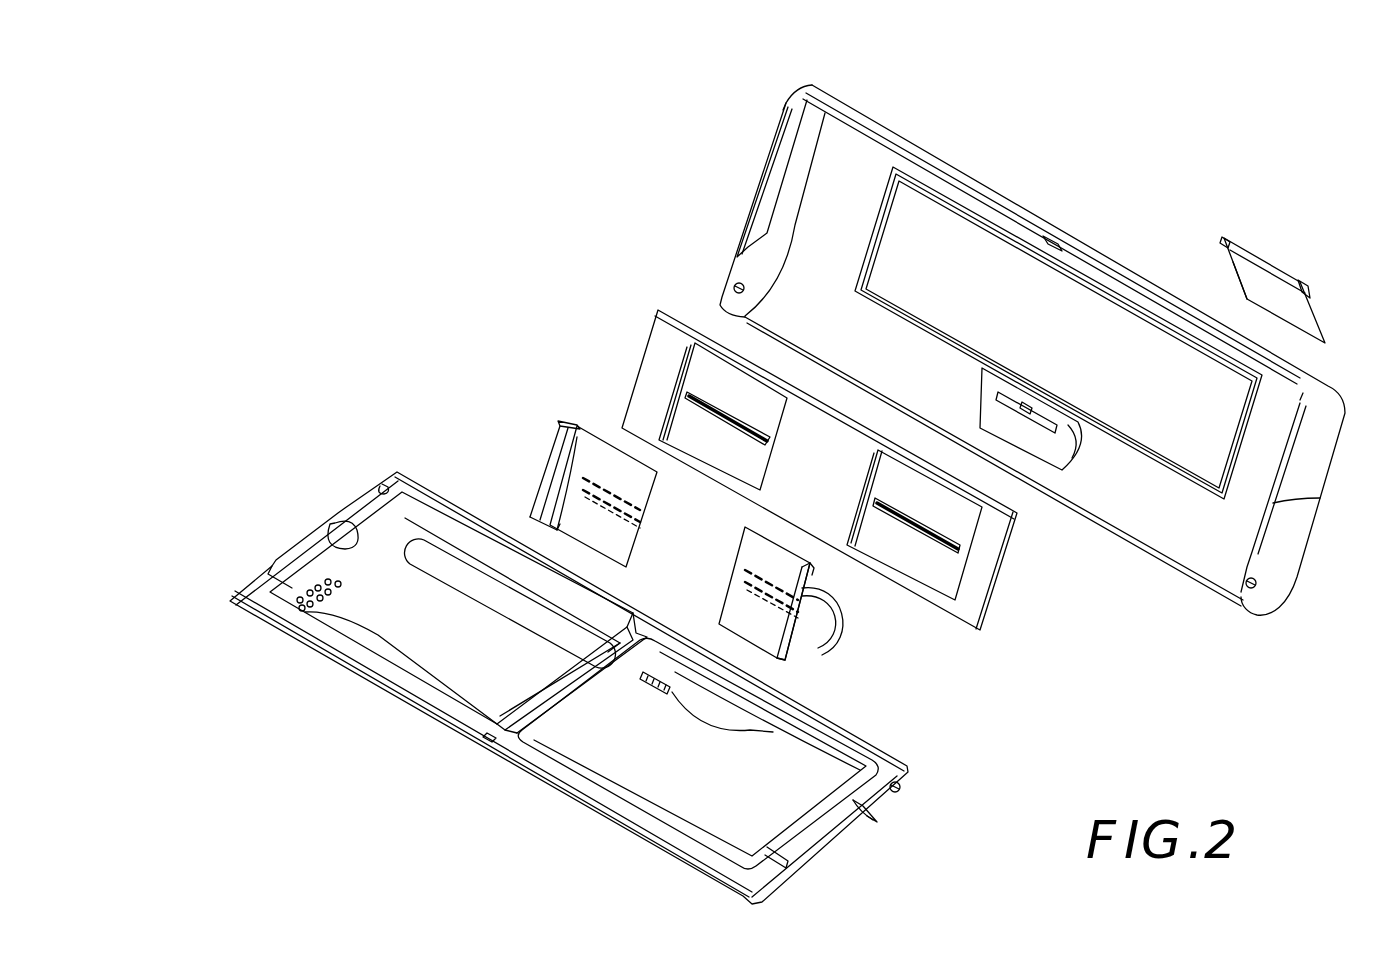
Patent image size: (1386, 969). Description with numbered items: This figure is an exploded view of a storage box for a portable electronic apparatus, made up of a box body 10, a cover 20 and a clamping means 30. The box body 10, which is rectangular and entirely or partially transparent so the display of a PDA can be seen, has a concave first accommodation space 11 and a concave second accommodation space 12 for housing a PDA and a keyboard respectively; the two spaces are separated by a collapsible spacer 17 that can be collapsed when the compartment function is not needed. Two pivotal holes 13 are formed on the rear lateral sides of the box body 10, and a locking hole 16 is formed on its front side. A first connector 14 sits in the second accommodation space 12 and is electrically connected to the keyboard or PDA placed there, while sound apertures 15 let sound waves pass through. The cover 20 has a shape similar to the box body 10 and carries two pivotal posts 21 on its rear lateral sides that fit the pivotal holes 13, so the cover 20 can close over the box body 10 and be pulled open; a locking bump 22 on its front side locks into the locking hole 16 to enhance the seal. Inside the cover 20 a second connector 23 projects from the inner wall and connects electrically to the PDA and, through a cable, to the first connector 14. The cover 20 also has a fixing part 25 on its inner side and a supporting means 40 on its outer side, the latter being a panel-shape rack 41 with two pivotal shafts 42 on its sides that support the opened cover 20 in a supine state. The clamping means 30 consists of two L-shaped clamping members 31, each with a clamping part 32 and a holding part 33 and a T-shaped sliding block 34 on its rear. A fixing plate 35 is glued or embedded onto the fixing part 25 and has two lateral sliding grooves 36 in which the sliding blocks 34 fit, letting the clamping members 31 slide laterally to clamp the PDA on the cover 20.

The box body 10 is at (333, 493).
The first accommodation space 11 is at (437, 632).
The second accommodation space 12 is at (673, 778).
The pivotal holes 13 is at (384, 485).
The first connector 14 is at (773, 732).
The sound apertures 15 is at (320, 580).
The locking hole 16 is at (487, 743).
The spacer 17 is at (568, 690).
The cover 20 is at (735, 165).
The pivotal posts 21 is at (733, 287).
The locking bump 22 is at (1052, 238).
The second connector 23 is at (1022, 413).
The fixing part 25 is at (1105, 338).
The clamping means 30 is at (702, 502).
The clamping members 31 is at (605, 455).
The clamping part 32 is at (813, 570).
The holding part 33 is at (824, 630).
The sliding block 34 is at (745, 592).
The fixing plate 35 is at (843, 499).
The sliding grooves 36 is at (955, 553).
The supporting means 40 is at (1302, 249).
The panel-shape rack 41 is at (1328, 320).
The pivotal shafts 42 is at (1224, 238).